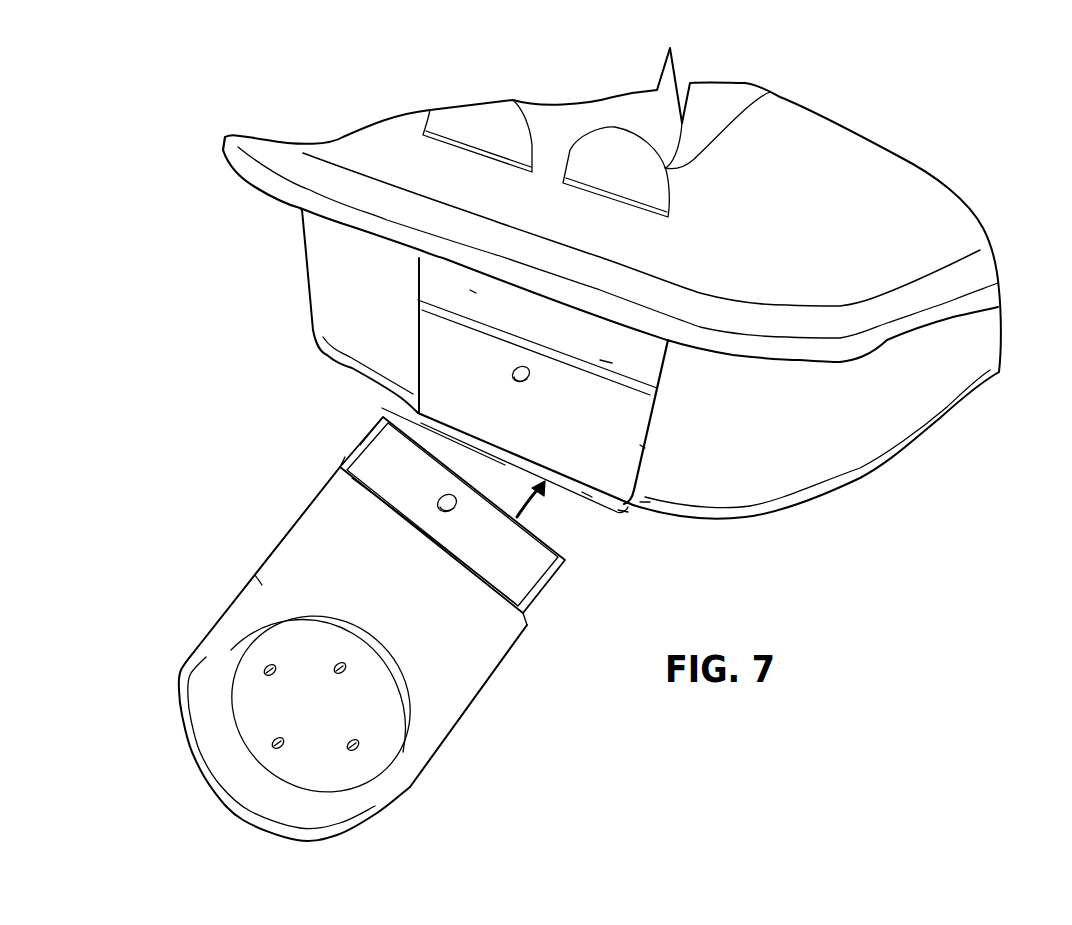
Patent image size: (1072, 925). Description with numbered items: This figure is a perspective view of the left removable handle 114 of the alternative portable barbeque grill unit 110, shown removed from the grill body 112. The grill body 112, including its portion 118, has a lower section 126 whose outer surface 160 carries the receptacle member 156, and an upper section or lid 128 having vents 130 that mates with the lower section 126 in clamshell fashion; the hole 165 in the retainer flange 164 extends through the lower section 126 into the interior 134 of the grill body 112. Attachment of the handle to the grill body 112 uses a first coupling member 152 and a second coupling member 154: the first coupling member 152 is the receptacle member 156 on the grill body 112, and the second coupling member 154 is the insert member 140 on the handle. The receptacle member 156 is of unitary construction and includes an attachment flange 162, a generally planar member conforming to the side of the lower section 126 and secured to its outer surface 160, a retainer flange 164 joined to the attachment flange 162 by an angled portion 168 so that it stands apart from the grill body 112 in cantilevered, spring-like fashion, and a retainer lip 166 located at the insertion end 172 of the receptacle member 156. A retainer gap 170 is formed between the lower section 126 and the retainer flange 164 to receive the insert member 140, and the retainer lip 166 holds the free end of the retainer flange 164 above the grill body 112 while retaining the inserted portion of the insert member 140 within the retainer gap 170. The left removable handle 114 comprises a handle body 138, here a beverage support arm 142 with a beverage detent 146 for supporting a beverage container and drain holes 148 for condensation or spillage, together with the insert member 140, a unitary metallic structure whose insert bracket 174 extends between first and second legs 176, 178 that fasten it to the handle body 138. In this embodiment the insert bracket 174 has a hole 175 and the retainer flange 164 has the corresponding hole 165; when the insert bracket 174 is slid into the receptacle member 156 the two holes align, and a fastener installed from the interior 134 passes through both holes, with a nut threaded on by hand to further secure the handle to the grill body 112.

The portable barbeque grill unit 110 is at (581, 444).
The grill body 112 is at (302, 293).
The left removable handle 114 is at (475, 719).
The upper flange 118 is at (347, 268).
The lower section 126 is at (933, 393).
The lid 128 is at (883, 182).
The vents 130 is at (757, 86).
The interior 134 is at (612, 165).
The handle body 138 is at (272, 538).
The insert member 140 is at (556, 598).
The beverage support arm 142 is at (272, 578).
The beverage detent 146 is at (260, 697).
The drain holes 148 is at (270, 737).
The first coupling member 152 is at (660, 418).
The second coupling member 154 is at (348, 440).
The receptacle member 156 is at (433, 283).
The outer surface 160 is at (723, 480).
The attachment flange 162 is at (473, 292).
The retainer flange 164 is at (470, 350).
The hole 165 is at (528, 380).
The retainer lip 166 is at (623, 503).
The angled portion 168 is at (607, 360).
The retainer gap 170 is at (647, 445).
The insertion end 172 is at (587, 500).
The insert bracket 174 is at (563, 540).
The hole 175 is at (457, 510).
The first leg 176 is at (540, 603).
The second leg 178 is at (345, 457).